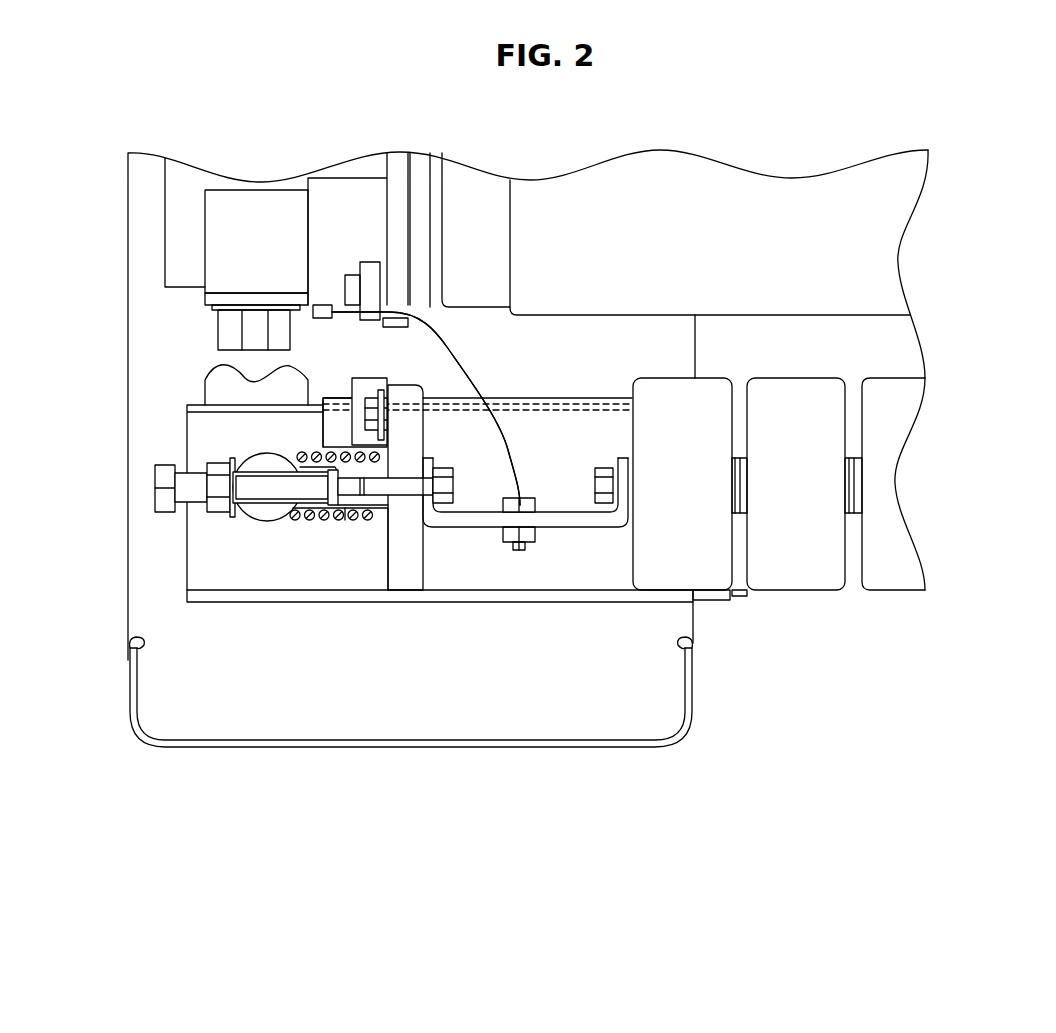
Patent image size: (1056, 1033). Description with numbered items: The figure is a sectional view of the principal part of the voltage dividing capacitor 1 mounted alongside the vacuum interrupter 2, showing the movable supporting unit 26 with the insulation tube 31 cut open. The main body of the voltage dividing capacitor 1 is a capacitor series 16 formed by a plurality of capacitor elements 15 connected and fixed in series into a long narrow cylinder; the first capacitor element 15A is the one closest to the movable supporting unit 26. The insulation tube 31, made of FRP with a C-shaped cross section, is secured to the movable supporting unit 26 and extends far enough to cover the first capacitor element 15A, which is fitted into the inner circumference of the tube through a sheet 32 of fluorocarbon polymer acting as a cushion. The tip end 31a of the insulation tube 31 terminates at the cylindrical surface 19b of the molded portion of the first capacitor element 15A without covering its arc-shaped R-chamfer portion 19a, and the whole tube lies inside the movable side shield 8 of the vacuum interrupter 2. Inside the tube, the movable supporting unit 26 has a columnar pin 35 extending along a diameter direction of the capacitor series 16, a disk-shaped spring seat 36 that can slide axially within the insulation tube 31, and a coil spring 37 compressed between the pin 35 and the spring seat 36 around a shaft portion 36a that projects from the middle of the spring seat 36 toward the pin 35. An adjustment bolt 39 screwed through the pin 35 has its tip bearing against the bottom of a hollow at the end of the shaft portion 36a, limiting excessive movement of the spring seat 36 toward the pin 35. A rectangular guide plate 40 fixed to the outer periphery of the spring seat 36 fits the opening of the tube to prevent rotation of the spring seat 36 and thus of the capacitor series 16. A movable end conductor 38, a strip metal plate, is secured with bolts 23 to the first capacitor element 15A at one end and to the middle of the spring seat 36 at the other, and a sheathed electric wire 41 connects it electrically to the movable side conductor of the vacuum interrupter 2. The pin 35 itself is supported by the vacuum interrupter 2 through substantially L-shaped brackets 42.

The voltage dividing capacitor 1 is at (908, 485).
The vacuum interrupter 2 is at (935, 187).
The movable side shield 8 is at (540, 750).
The capacitor element 15 is at (805, 568).
The first capacitor element 15A is at (705, 397).
The capacitor series 16 is at (888, 370).
The R-chamfer portion 19a is at (735, 598).
The cylindrical surface 19b is at (712, 598).
The bolt 23 is at (440, 470).
The movable supporting unit 26 is at (205, 443).
The insulation tube 31 is at (520, 602).
The tip end 31a is at (697, 602).
The sheet 32 is at (340, 398).
The pin 35 is at (258, 520).
The spring seat 36 is at (402, 397).
The shaft portion 36a is at (345, 520).
The coil spring 37 is at (305, 525).
The movable end conductor 38 is at (568, 525).
The adjustment bolt 39 is at (165, 503).
The guide plate 40 is at (372, 395).
The sheathed electric wire 41 is at (505, 440).
The bracket 42 is at (215, 387).